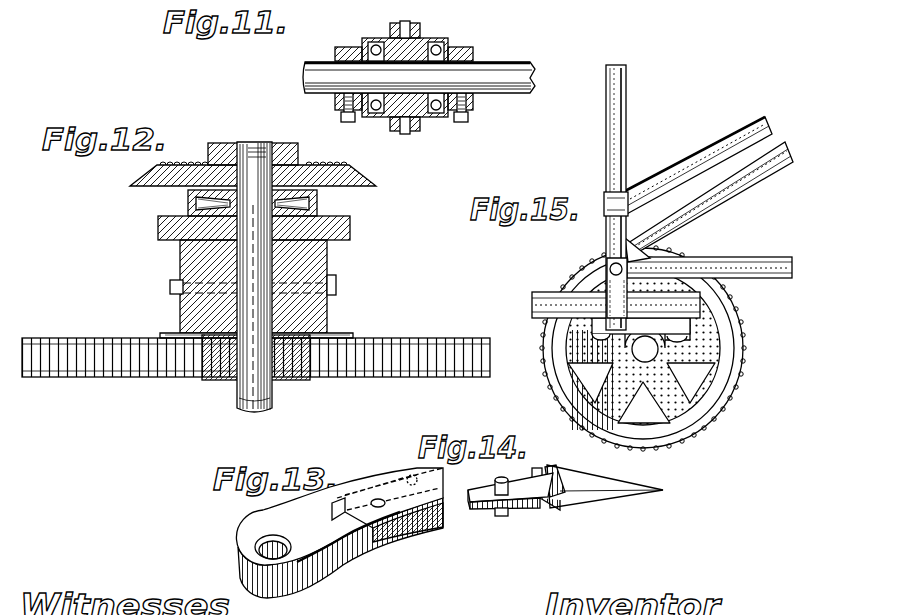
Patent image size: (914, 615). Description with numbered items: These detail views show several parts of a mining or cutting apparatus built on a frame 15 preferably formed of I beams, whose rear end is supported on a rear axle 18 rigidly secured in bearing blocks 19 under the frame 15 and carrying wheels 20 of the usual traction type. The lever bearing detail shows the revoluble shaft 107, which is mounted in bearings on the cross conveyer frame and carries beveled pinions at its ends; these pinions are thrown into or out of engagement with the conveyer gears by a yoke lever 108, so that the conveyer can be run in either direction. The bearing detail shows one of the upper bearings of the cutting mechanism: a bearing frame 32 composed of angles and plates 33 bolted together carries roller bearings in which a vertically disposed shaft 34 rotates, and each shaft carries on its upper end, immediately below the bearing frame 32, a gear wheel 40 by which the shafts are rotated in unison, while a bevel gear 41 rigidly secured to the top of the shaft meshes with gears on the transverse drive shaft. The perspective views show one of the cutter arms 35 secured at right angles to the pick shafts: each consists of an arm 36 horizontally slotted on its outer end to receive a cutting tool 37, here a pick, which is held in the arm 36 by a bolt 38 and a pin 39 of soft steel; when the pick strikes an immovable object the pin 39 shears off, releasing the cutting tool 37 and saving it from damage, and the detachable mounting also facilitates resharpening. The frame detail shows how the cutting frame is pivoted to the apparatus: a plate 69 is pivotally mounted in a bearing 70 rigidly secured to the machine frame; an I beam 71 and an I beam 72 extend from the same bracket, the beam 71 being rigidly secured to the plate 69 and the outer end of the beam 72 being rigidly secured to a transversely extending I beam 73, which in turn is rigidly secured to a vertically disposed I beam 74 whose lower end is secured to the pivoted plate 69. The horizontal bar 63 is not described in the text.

In FIG. 11, the revoluble shaft 107 is at (328, 94).
In FIG. 11, the yoke lever 108 is at (420, 31).
In FIG. 12, the bevel gear 41 is at (154, 187).
In FIG. 12, the vertically disposed shaft 34 is at (275, 236).
In FIG. 12, the angles and plates 33 is at (330, 253).
In FIG. 12, the bearing frame 32 is at (336, 305).
In FIG. 12, the gear wheel 40 is at (138, 378).
In FIG. 15, the vertically disposed I beam 74 is at (615, 102).
In FIG. 15, the transversely extending I beam 73 is at (612, 204).
In FIG. 15, the I beam 72 is at (665, 167).
In FIG. 15, the I beam 71 is at (690, 207).
In FIG. 15, the plate 69 is at (630, 237).
In FIG. 15, the horizontal bar 63 is at (727, 263).
In FIG. 15, the bearing 70 is at (590, 268).
In FIG. 15, the frame 15 is at (530, 305).
In FIG. 15, the bearing block 19 is at (683, 327).
In FIG. 15, the rear axle 18 is at (657, 347).
In FIG. 15, the wheel 20 is at (727, 377).
In FIG. 13, the arm 36 is at (283, 510).
In FIG. 13, the cutter arm 35 is at (446, 537).
In FIG. 14, the cutting tool 37 is at (598, 495).
In FIG. 14, the bolt 38 is at (502, 516).
In FIG. 14, the pin 39 is at (538, 468).